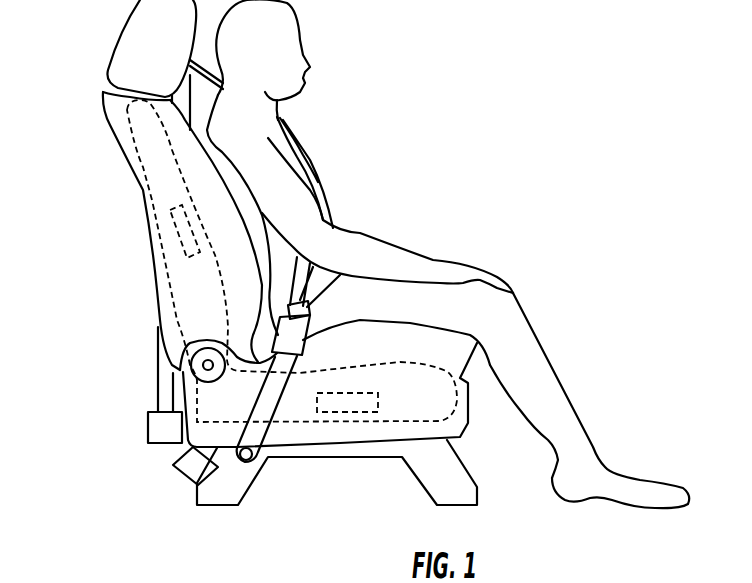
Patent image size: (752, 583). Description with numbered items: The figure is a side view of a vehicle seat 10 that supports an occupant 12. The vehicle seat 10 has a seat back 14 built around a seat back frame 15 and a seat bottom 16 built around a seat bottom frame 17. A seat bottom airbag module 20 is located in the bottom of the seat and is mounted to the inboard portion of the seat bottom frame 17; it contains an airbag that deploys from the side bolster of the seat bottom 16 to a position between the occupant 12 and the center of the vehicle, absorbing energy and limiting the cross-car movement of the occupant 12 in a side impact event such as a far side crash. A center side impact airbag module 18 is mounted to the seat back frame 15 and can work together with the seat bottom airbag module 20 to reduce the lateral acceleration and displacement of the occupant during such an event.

The vehicle seat 10 is at (100, 427).
The occupant 12 is at (290, 33).
The seat back 14 is at (165, 313).
The seat back frame 15 is at (133, 113).
The seat bottom 16 is at (455, 357).
The seat bottom frame 17 is at (280, 417).
The center side impact airbag module 18 is at (163, 212).
The seat bottom airbag module 20 is at (347, 412).